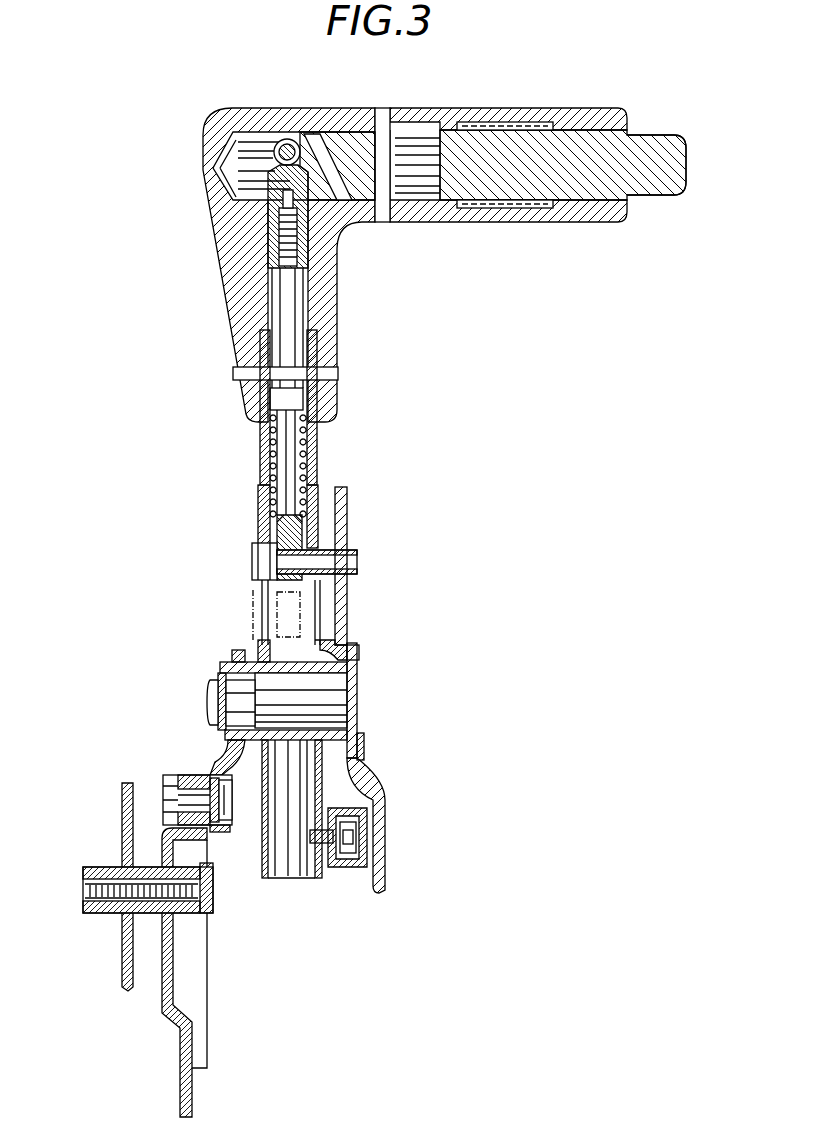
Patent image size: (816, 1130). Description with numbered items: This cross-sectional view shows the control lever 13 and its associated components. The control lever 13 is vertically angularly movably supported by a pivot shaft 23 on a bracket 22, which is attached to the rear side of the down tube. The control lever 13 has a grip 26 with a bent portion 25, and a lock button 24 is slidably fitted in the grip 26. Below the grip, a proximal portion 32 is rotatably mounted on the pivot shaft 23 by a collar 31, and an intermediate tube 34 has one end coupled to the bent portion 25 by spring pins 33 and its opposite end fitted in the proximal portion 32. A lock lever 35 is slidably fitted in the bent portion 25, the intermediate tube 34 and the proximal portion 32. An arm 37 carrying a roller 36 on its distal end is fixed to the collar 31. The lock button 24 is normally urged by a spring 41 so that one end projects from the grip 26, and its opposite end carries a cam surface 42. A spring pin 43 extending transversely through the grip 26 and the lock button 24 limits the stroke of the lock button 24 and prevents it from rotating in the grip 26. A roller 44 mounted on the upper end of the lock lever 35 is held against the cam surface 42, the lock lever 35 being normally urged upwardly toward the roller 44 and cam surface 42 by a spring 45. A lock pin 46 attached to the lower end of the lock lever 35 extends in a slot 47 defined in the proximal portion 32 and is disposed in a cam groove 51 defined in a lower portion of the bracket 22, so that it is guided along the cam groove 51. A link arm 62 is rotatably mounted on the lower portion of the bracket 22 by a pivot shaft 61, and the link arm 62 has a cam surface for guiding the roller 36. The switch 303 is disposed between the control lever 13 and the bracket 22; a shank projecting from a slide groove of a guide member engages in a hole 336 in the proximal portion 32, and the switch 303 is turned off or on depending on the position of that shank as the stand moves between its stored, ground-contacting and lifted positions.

The control lever 13 is at (531, 100).
The bracket 22 is at (382, 797).
The pivot shaft 23 is at (360, 700).
The lock button 24 is at (655, 198).
The bent portion 25 is at (340, 301).
The grip 26 is at (541, 223).
The collar 31 is at (350, 656).
The proximal portion 32 is at (258, 501).
The spring pins 33 is at (240, 371).
The intermediate tube 34 is at (317, 443).
The lock lever 35 is at (285, 448).
The roller 36 is at (190, 780).
The arm 37 is at (226, 760).
The spring 41 is at (548, 123).
The cam surface 42 is at (330, 176).
The spring pin 43 is at (390, 110).
The roller 44 is at (276, 138).
The spring 45 is at (320, 465).
The lock pin 46 is at (255, 567).
The slot 47 is at (262, 596).
The cam groove 51 is at (347, 590).
The pivot shaft 61 is at (88, 905).
The link arm 62 is at (163, 1010).
The switch 303 is at (365, 842).
The hole 336 is at (302, 855).